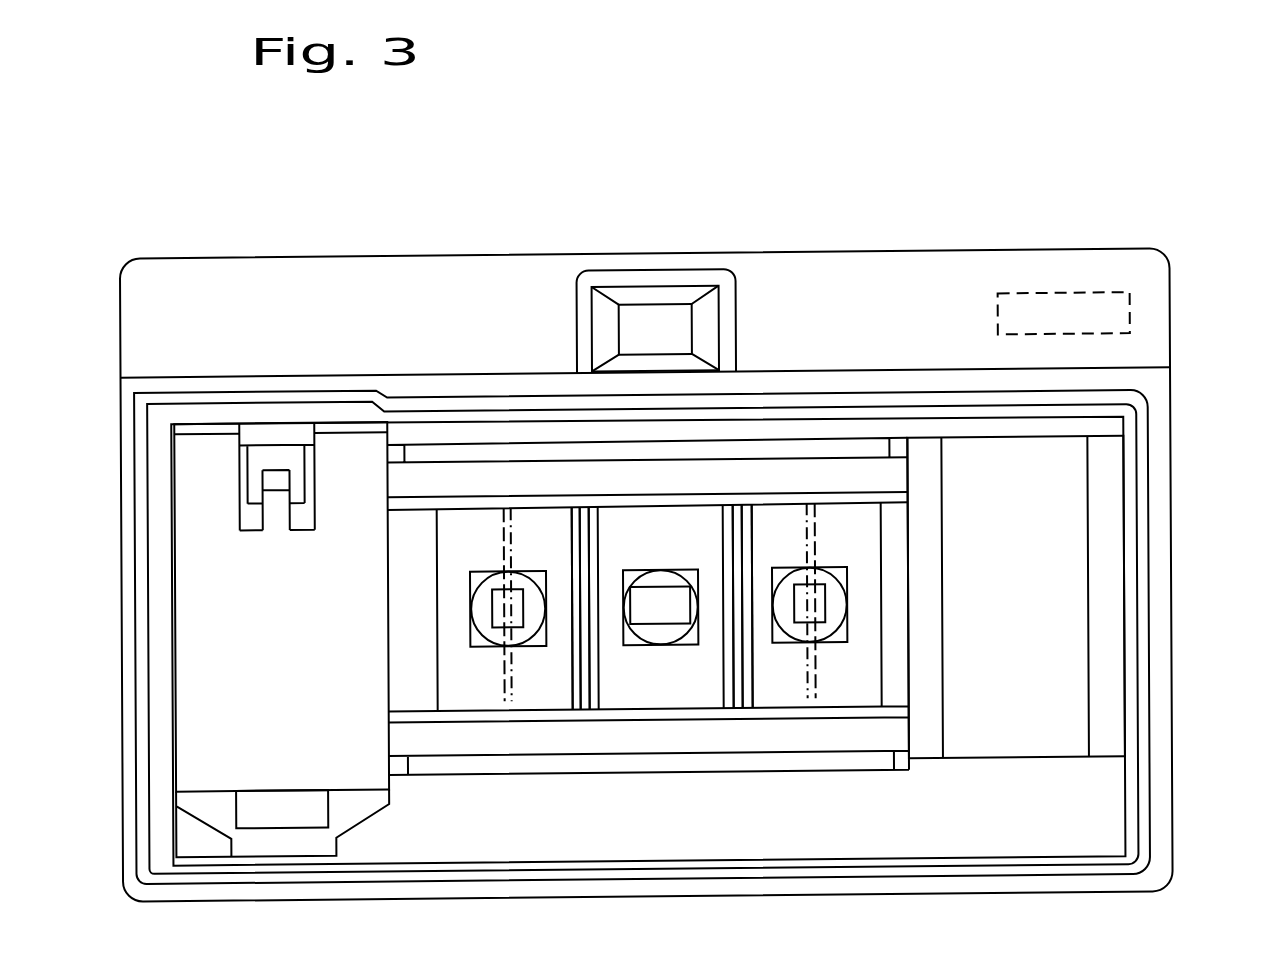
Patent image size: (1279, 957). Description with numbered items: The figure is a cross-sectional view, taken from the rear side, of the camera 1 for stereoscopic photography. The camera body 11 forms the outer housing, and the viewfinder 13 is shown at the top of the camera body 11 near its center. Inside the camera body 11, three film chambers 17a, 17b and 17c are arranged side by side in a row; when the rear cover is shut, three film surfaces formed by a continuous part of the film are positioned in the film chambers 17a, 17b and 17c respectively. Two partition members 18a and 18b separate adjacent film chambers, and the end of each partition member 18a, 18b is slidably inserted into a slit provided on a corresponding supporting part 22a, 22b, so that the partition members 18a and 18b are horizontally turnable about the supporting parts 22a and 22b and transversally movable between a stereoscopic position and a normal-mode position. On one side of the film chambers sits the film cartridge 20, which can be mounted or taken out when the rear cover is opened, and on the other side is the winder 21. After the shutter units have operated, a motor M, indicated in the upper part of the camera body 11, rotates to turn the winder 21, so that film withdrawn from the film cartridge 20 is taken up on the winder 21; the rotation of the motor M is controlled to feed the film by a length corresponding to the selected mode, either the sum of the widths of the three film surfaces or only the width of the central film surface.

The camera 1 is at (550, 115).
The camera body 11 is at (1169, 322).
The viewfinder 13 is at (665, 318).
The motor M is at (1053, 300).
The film cartridge 20 is at (347, 452).
The winder 21 is at (1073, 482).
The film chamber 17a is at (873, 553).
The film chamber 17b is at (688, 557).
The film chamber 17c is at (493, 557).
The partition member 18a is at (737, 507).
The partition member 18b is at (583, 537).
The supporting part 22a is at (747, 525).
The supporting part 22b is at (575, 535).